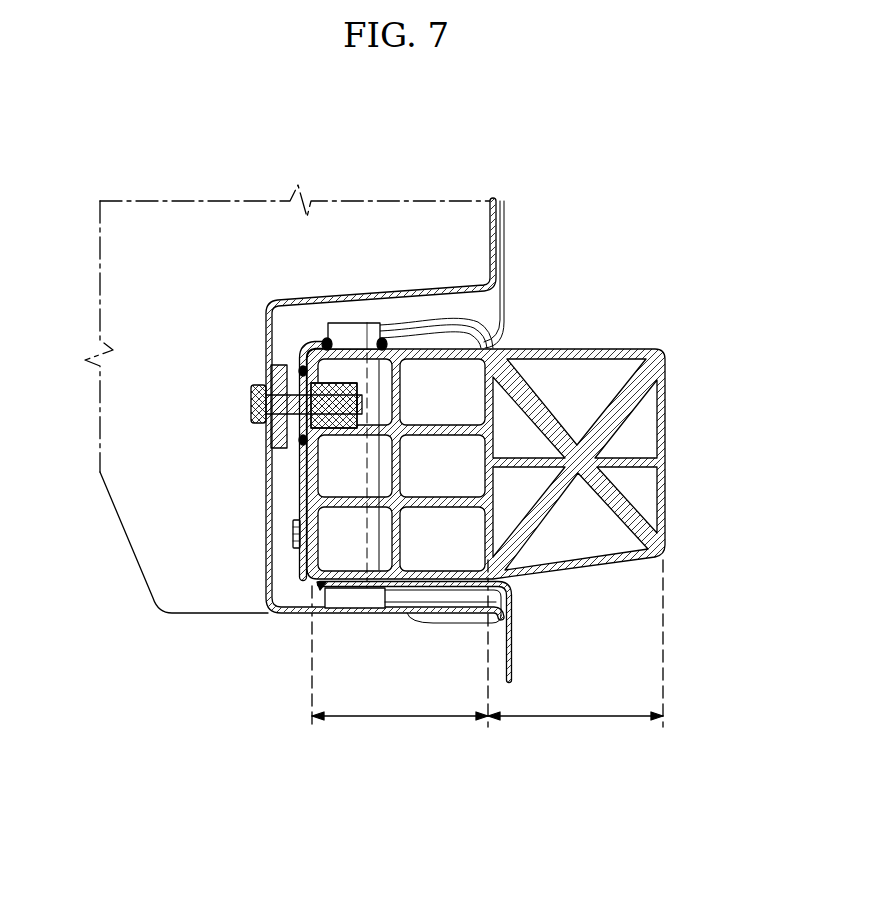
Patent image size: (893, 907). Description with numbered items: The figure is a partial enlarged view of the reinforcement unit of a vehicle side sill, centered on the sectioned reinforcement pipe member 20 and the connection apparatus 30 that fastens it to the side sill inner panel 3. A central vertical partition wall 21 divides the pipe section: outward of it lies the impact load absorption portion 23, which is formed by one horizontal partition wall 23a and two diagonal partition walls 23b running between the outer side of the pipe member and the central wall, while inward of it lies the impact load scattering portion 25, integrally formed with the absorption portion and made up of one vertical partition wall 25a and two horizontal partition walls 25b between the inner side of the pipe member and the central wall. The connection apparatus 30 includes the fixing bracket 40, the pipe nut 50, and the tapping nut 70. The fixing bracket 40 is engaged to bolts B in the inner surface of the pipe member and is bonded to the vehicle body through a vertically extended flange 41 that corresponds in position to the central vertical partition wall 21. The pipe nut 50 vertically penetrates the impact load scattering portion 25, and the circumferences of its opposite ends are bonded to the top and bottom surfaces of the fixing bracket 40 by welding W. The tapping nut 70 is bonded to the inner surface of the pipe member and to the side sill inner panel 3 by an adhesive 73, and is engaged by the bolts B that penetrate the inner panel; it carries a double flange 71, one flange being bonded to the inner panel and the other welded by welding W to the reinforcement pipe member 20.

The side sill inner panel 3 is at (393, 290).
The reinforcement pipe member 20 is at (669, 345).
The central vertical partition wall 21 is at (512, 403).
The impact load absorption portion 23 is at (576, 737).
The horizontal partition wall 23a is at (627, 466).
The diagonal partition walls 23b is at (602, 435).
The impact load scattering portion 25 is at (487, 655).
The vertical partition wall 25a is at (487, 370).
The horizontal partition walls 25b is at (363, 503).
The connection apparatus 30 is at (124, 668).
The fixing bracket 40 is at (452, 341).
The flange 41 is at (504, 250).
The pipe nut 50 is at (354, 593).
The tapping nut 70 is at (303, 368).
The flange 71 is at (279, 364).
The adhesive 73 is at (352, 431).
The bolt B is at (252, 393).
The welding W is at (299, 441).